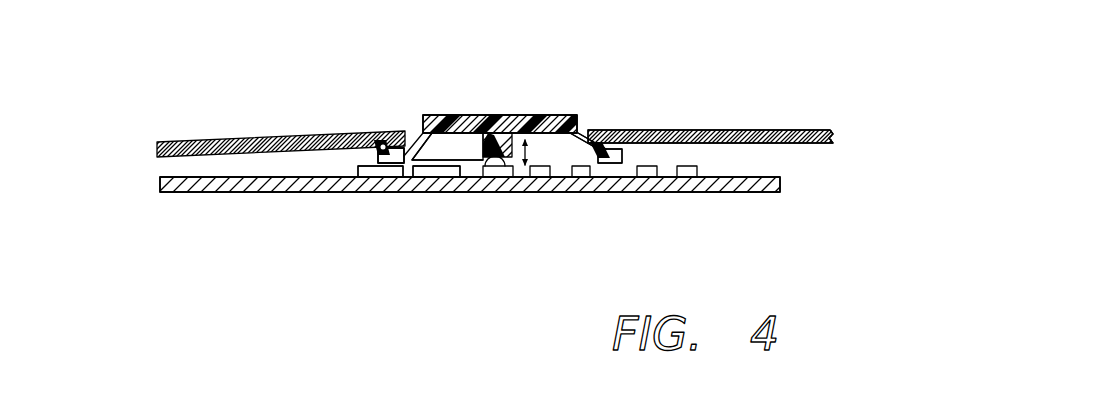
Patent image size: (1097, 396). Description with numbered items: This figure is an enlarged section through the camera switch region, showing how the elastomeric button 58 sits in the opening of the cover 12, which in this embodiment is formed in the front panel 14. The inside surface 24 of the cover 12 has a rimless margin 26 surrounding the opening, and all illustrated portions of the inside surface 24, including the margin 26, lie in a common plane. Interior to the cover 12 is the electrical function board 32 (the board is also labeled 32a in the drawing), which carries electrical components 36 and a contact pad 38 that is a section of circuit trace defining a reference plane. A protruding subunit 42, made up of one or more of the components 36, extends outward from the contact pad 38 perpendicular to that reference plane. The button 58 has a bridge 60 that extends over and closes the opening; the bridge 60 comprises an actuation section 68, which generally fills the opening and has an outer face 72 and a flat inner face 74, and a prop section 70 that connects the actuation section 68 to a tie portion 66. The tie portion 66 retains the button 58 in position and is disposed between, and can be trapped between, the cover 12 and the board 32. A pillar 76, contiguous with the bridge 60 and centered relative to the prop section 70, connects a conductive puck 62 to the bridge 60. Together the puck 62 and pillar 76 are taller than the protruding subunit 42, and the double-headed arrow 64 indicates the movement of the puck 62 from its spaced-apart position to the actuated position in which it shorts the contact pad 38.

The cover 12 is at (728, 130).
The front panel 14 is at (710, 136).
The inside surface 24 is at (242, 148).
The rimless margin 26 is at (380, 140).
The electrical function board 32 is at (750, 194).
The substrate upper layer 32a is at (470, 184).
The electrical components 36 is at (357, 179).
The contact pad 38 is at (484, 191).
The protruding subunit 42 is at (473, 223).
The elastomeric button 58 is at (490, 113).
The bridge 60 is at (488, 57).
The conductive puck 62 is at (508, 168).
The double-headed arrow 64 is at (527, 139).
The tie portion 66 is at (378, 160).
The actuation section 68 is at (475, 114).
The prop section 70 is at (413, 130).
The outer face 72 is at (572, 115).
The inner face 74 is at (593, 143).
The pillar 76 is at (483, 145).